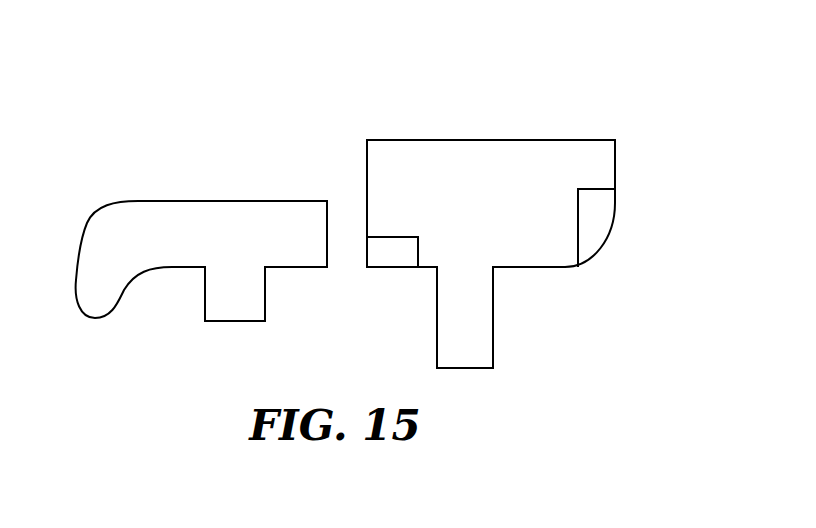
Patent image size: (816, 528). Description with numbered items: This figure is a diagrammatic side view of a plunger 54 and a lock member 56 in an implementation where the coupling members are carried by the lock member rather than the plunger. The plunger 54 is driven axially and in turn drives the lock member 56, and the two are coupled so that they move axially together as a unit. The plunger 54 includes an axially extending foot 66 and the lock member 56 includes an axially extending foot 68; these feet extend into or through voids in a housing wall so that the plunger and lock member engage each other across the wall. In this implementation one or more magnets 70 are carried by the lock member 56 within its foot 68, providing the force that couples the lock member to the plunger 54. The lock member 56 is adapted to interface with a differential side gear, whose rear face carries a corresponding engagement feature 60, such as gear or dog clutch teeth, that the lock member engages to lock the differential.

The plunger 54 is at (180, 197).
The feet of the plunger 66 is at (293, 213).
The lock member 56 is at (592, 127).
The foot of the lock member 68 is at (417, 175).
The magnets 70 is at (395, 252).
The engagement feature 60 is at (593, 228).